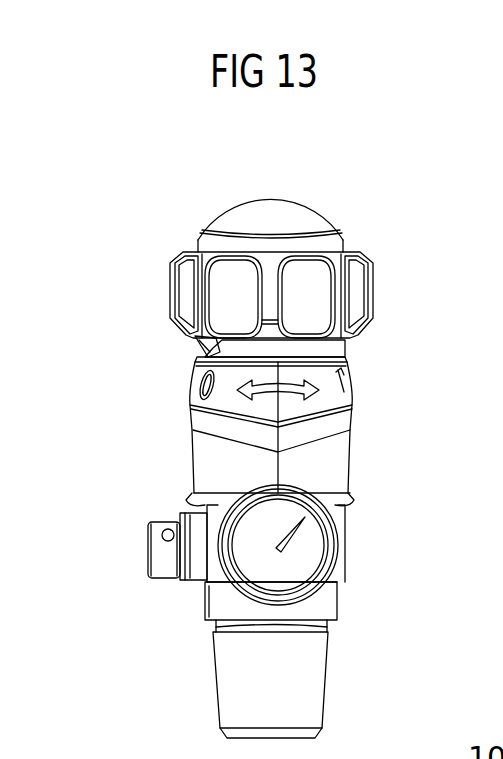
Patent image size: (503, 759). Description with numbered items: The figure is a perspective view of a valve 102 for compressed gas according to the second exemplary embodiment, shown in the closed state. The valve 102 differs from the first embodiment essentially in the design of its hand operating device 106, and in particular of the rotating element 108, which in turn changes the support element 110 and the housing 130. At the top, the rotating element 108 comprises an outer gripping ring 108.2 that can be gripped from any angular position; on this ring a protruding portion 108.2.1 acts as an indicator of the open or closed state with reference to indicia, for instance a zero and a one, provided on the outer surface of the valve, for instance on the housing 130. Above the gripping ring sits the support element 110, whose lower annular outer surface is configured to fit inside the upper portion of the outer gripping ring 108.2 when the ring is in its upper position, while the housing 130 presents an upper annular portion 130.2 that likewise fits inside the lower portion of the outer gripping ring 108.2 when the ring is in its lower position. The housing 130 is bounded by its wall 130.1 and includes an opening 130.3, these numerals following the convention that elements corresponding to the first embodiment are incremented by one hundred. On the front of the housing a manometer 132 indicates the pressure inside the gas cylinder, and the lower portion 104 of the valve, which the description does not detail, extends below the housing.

The valve 102 is at (190, 178).
The connection piece 104 is at (228, 604).
The hand operating device 106 is at (136, 262).
The rotating element 108 is at (382, 292).
The outer gripping ring 108.2 is at (193, 297).
The protruding portion 108.2.1 is at (200, 348).
The support element 110 is at (293, 218).
The housing 130 is at (158, 458).
The wall 130.1 is at (323, 450).
The upper annular portion 130.2 is at (328, 347).
The opening 130.3 is at (338, 530).
The manometer 132 is at (300, 559).